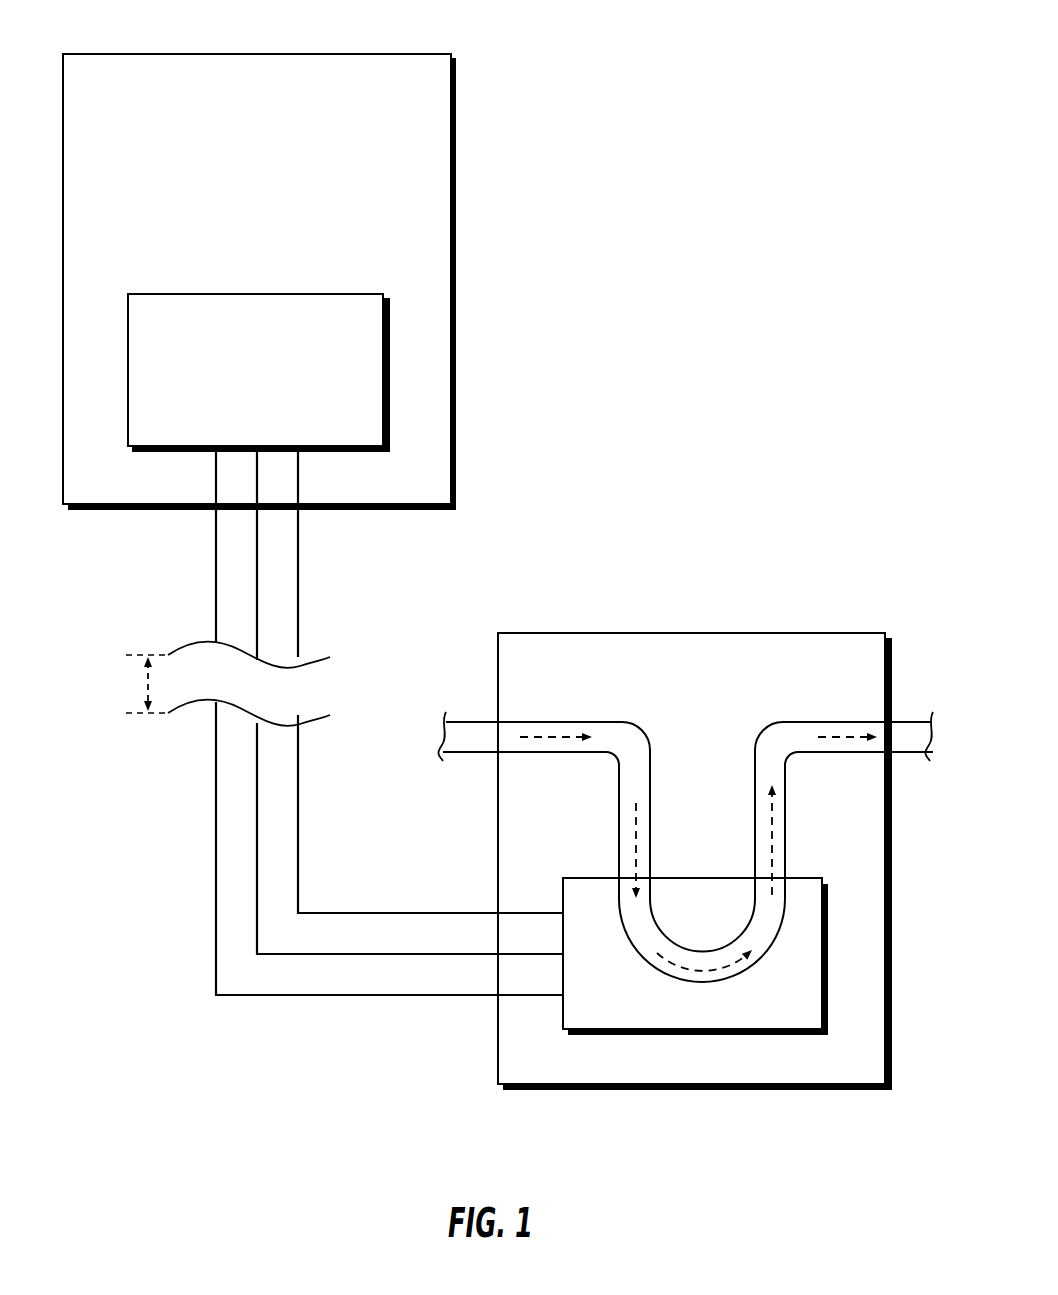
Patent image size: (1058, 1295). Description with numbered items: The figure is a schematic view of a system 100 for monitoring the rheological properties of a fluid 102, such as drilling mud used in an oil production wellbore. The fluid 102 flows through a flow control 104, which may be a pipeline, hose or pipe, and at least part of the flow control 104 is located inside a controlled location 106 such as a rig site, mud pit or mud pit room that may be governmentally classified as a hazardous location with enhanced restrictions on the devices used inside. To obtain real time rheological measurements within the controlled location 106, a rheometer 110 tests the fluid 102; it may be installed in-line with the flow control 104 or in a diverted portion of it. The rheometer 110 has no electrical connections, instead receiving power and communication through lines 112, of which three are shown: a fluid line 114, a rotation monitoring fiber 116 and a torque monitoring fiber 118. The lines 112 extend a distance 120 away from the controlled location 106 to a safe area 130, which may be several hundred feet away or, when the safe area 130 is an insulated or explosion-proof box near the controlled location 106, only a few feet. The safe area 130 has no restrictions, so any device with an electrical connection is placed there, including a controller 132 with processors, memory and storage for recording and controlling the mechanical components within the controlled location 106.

The system 100 is at (845, 52).
The fluid 102 is at (545, 737).
The flow control 104 is at (660, 752).
The controlled location 106 is at (773, 633).
The rheometer 110 is at (800, 878).
The lines 112 is at (347, 776).
The fluid line 114 is at (298, 805).
The rotation monitoring fiber 116 is at (257, 878).
The torque monitoring fiber 118 is at (216, 830).
The distance 120 is at (148, 685).
The safe area 130 is at (352, 54).
The controller 132 is at (352, 294).